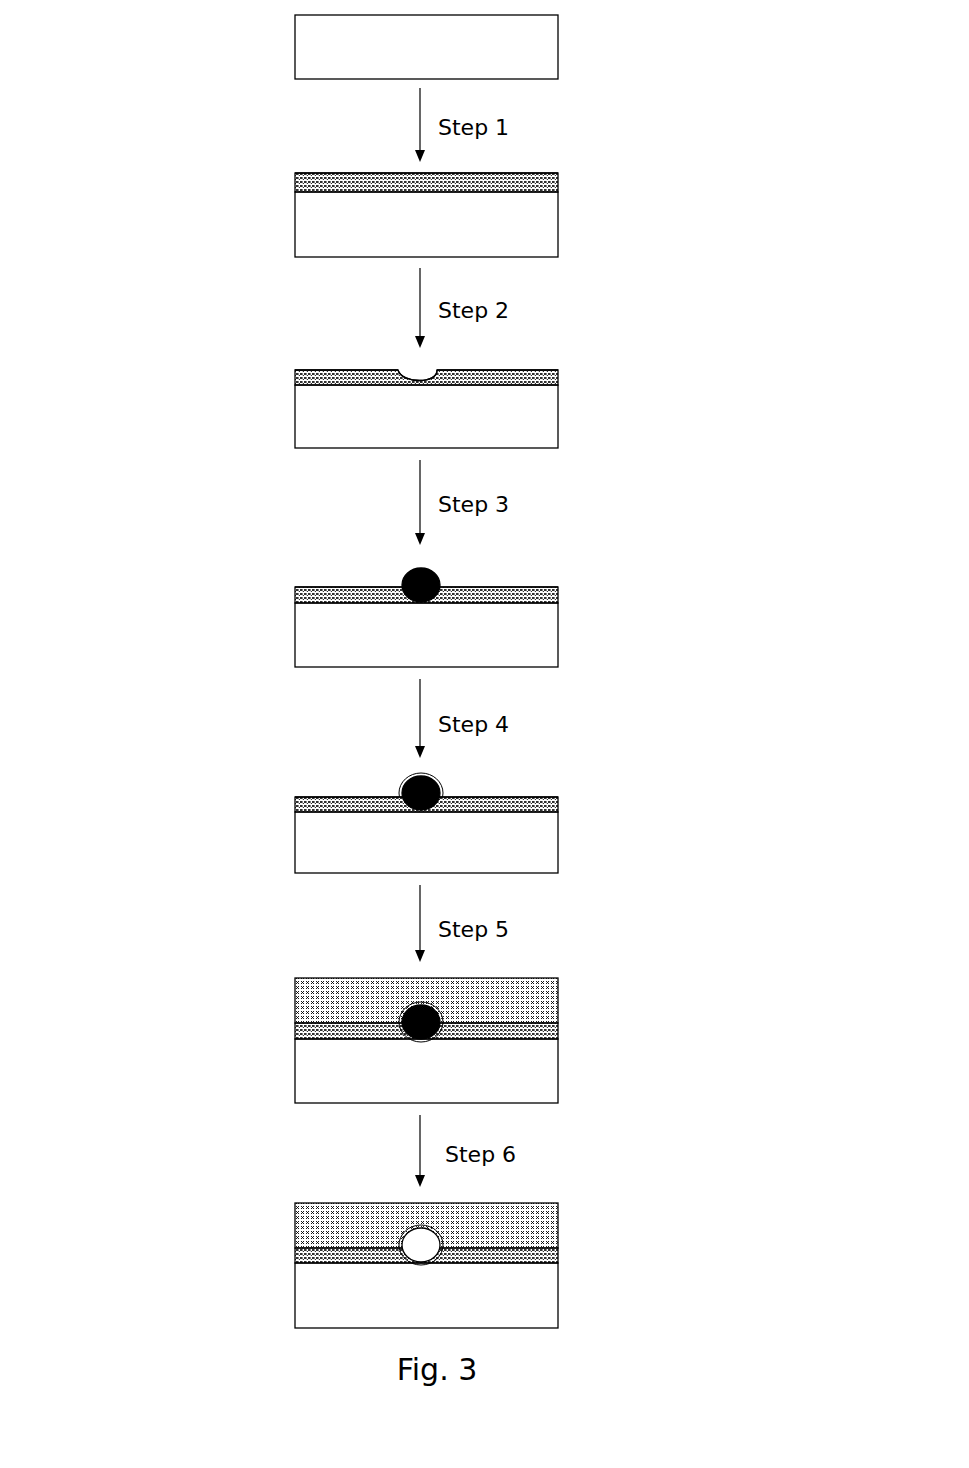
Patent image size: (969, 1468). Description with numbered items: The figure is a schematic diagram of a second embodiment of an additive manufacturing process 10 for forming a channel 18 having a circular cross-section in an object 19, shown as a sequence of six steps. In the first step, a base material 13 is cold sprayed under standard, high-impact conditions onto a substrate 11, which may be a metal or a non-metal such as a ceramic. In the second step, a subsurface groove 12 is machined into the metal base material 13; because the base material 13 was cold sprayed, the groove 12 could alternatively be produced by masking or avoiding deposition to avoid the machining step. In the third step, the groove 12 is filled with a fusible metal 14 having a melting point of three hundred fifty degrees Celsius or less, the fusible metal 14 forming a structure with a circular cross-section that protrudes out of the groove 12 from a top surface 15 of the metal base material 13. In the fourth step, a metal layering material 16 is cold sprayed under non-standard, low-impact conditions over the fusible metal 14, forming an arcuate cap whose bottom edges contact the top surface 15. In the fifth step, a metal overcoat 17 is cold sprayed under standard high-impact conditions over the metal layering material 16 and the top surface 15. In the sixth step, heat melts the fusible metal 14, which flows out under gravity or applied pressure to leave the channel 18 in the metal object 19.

The additive manufacturing process 10 is at (134, 182).
The substrate 11 is at (553, 67).
The subsurface groove 12 is at (422, 377).
The base material 13 is at (557, 182).
The fusible metal 14 is at (403, 583).
The top surface 15 is at (507, 173).
The metal layering material 16 is at (413, 773).
The metal overcoat 17 is at (545, 990).
The channel 18 is at (405, 1243).
The object 19 is at (273, 1260).